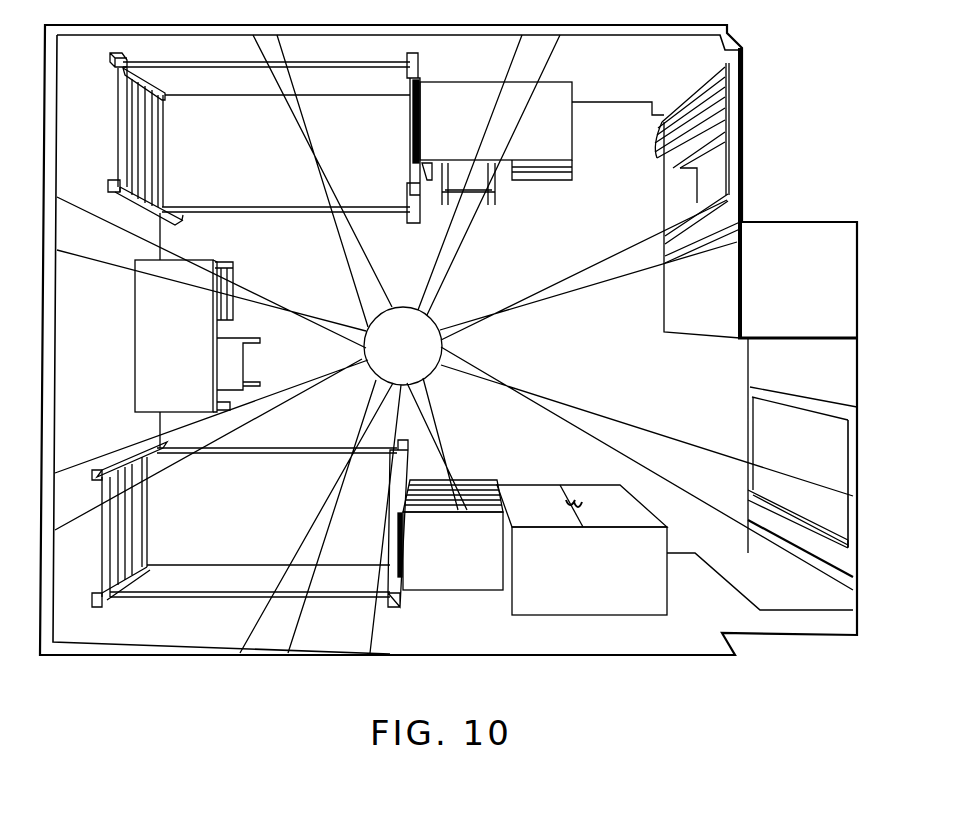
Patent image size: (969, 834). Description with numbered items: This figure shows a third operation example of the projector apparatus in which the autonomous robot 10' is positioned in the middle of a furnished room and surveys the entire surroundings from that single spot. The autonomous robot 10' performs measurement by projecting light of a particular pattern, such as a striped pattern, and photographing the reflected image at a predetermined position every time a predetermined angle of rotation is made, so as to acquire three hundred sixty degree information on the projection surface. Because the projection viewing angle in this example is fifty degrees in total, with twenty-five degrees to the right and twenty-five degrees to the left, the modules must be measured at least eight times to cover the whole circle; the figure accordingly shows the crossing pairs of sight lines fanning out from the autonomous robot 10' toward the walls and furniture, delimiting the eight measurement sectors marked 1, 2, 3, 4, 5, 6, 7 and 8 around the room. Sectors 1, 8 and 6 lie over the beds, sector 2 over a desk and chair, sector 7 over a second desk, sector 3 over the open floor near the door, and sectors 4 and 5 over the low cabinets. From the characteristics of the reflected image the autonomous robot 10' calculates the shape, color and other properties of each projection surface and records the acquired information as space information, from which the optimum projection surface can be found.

The autonomous robot 10' is at (454, 344).
The position 1 is at (391, 138).
The position 2 is at (496, 151).
The position 3 is at (656, 212).
The position 4 is at (582, 536).
The position 5 is at (427, 523).
The position 6 is at (244, 524).
The position 7 is at (197, 336).
The position 8 is at (259, 139).